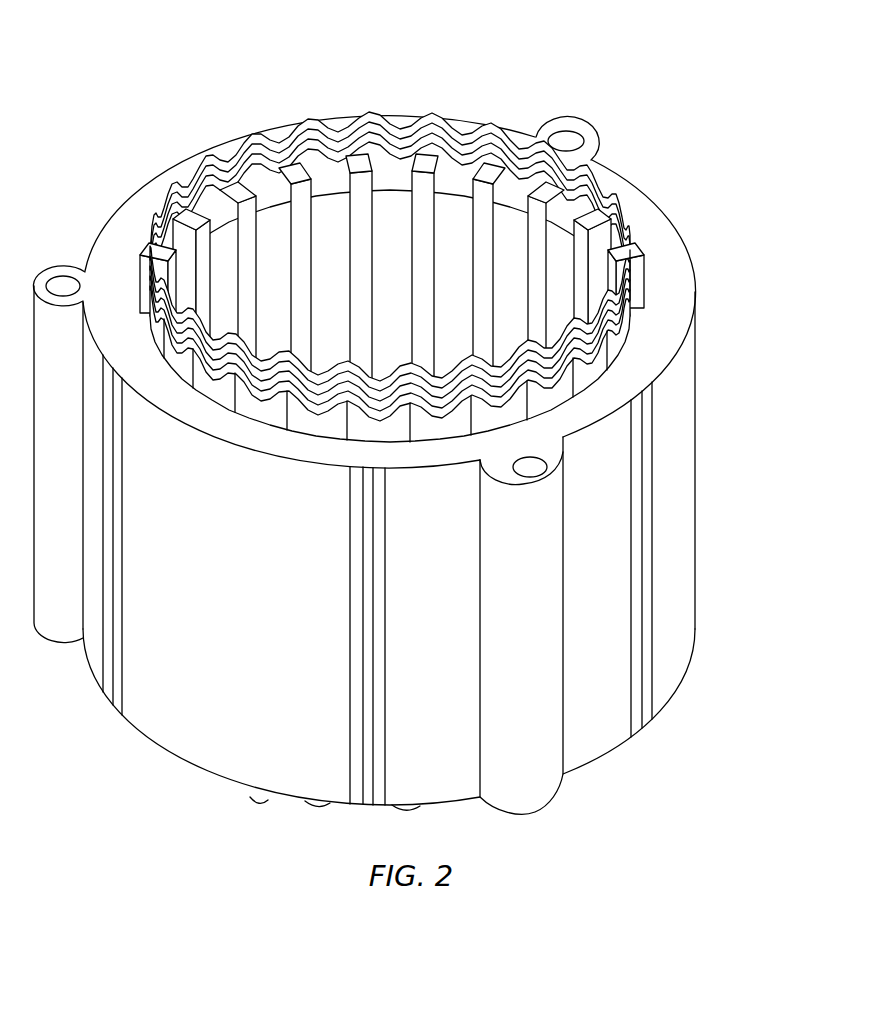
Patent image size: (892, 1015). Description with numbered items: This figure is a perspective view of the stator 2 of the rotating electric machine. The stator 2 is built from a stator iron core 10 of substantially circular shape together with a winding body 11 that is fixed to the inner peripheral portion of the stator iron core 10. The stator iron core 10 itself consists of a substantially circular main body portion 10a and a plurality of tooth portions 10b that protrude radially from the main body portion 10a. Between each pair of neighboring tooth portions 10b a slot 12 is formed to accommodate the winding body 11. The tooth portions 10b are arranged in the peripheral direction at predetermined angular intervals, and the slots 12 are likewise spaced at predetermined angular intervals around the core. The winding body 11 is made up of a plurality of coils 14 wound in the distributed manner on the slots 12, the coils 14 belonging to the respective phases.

The stator 2 is at (402, 423).
The stator iron core 10 is at (402, 465).
The main body portion 10a is at (587, 390).
The tooth portion 10b is at (453, 210).
The winding body 11 is at (402, 150).
The slot 12 is at (303, 225).
The coil 14 is at (328, 150).